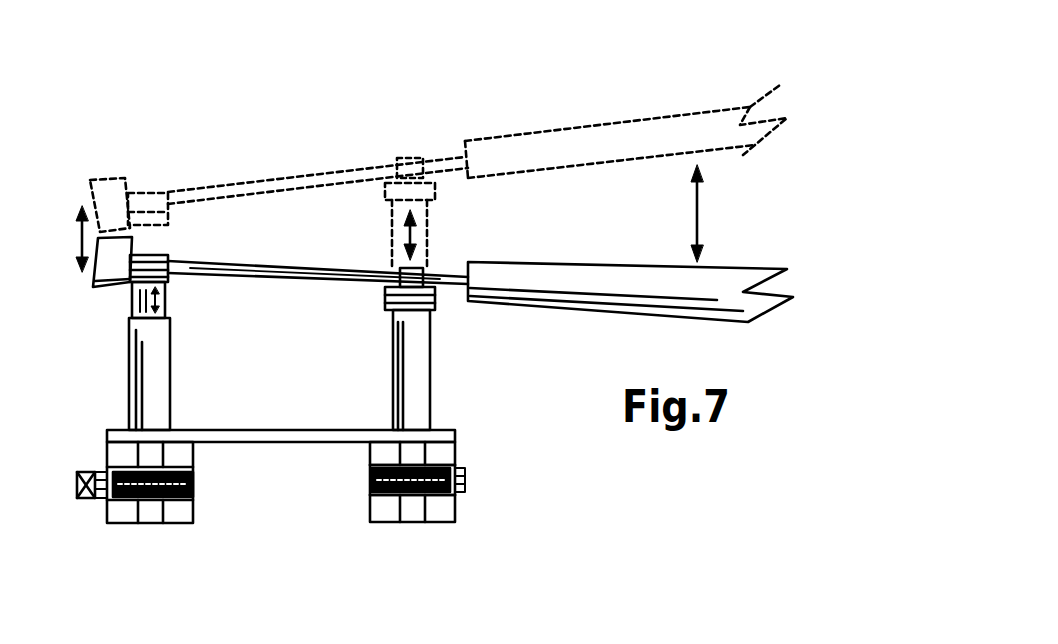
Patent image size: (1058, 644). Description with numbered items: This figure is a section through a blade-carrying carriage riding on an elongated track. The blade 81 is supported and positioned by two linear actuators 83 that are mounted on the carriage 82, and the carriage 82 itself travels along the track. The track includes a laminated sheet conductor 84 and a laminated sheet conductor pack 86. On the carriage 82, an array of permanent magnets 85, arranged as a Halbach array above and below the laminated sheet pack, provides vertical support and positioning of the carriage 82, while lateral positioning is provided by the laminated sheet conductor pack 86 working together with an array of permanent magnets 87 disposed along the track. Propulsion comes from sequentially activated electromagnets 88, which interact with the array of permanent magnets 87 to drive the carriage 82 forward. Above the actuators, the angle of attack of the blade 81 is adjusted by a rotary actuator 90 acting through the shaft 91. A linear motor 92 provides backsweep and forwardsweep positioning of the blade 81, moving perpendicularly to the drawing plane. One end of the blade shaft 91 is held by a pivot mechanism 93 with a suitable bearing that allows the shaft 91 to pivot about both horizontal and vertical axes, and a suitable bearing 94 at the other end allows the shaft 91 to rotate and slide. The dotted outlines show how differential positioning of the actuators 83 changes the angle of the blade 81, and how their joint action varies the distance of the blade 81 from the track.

The blade 81 is at (583, 167).
The carriage 82 is at (458, 430).
The linear actuators 83 is at (383, 312).
The laminated sheet conductor 84 is at (372, 481).
The array of permanent magnets 85 is at (457, 455).
The laminated sheet conductor pack 86 is at (122, 500).
The array of permanent magnets 87 is at (104, 498).
The electromagnets 88 is at (88, 470).
The rotary actuator 90 is at (103, 288).
The shaft 91 is at (308, 268).
The linear motor 92 is at (435, 300).
The pivot mechanism 93 is at (167, 285).
The bearing 94 is at (420, 268).